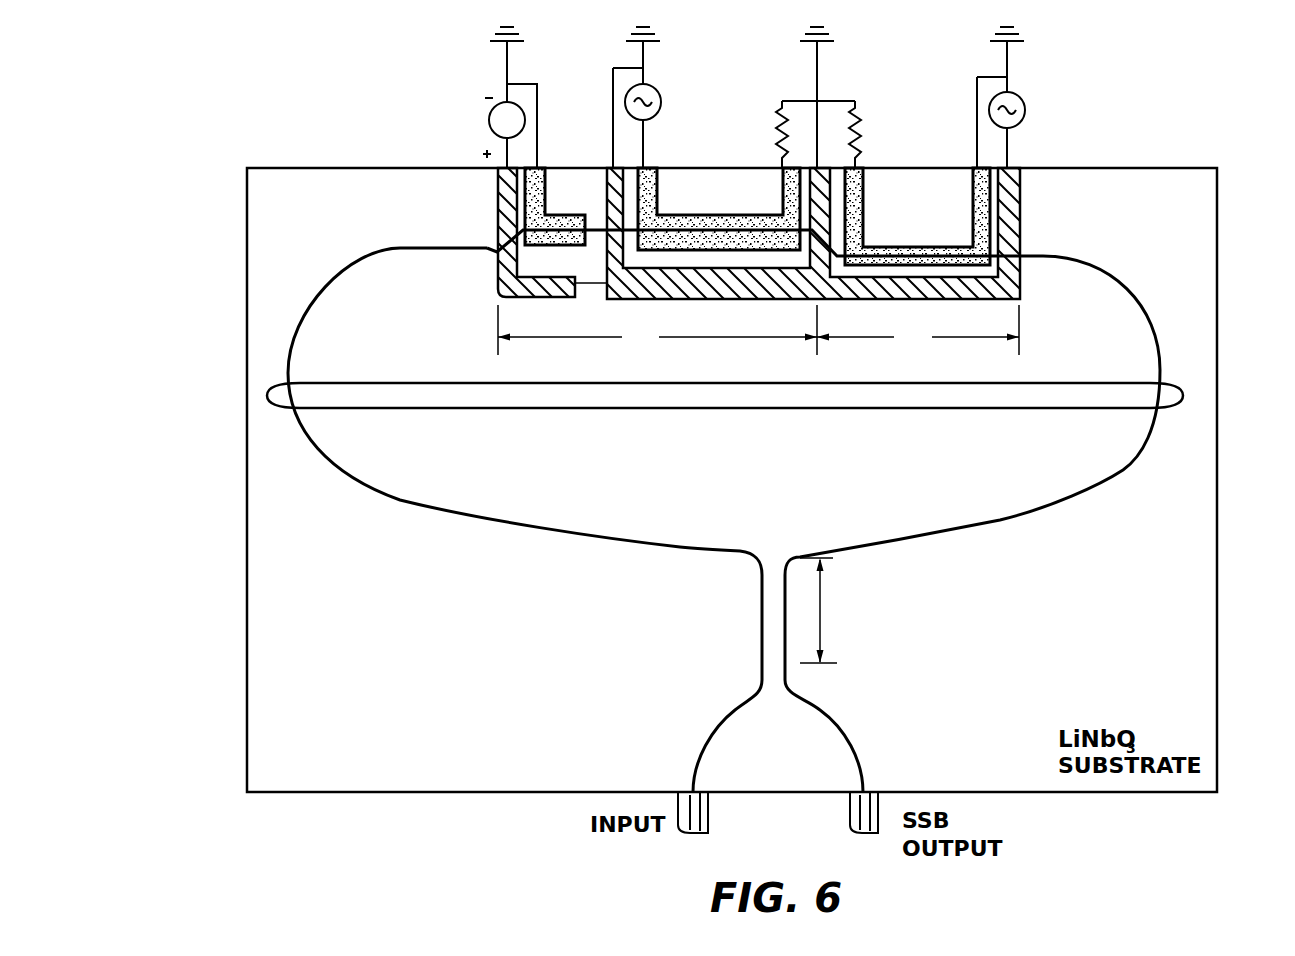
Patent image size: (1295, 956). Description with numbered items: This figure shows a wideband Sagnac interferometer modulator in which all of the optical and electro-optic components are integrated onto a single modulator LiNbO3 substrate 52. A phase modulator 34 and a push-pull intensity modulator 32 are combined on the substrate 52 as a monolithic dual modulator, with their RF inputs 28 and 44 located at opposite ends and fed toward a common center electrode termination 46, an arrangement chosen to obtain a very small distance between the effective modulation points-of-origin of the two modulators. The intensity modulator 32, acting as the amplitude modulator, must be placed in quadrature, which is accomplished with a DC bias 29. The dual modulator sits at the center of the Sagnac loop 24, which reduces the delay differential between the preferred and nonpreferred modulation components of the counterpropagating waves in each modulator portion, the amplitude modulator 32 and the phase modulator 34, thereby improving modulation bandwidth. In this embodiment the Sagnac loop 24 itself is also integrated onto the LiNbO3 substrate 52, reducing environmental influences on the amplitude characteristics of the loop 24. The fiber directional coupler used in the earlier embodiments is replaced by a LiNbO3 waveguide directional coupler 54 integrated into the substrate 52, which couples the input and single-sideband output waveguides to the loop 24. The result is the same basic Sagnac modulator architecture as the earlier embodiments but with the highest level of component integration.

The Sagnac loop 24 is at (267, 392).
The RF input 28 is at (643, 62).
The DC bias 29 is at (507, 70).
The push-pull intensity modulator 32 is at (657, 330).
The phase modulator 34 is at (918, 330).
The RF input 44 is at (1007, 60).
The common center electrode termination 46 is at (817, 78).
The LiNbO3 substrate 52 is at (1217, 650).
The LiNbO3 waveguide directional coupler 54 is at (884, 610).